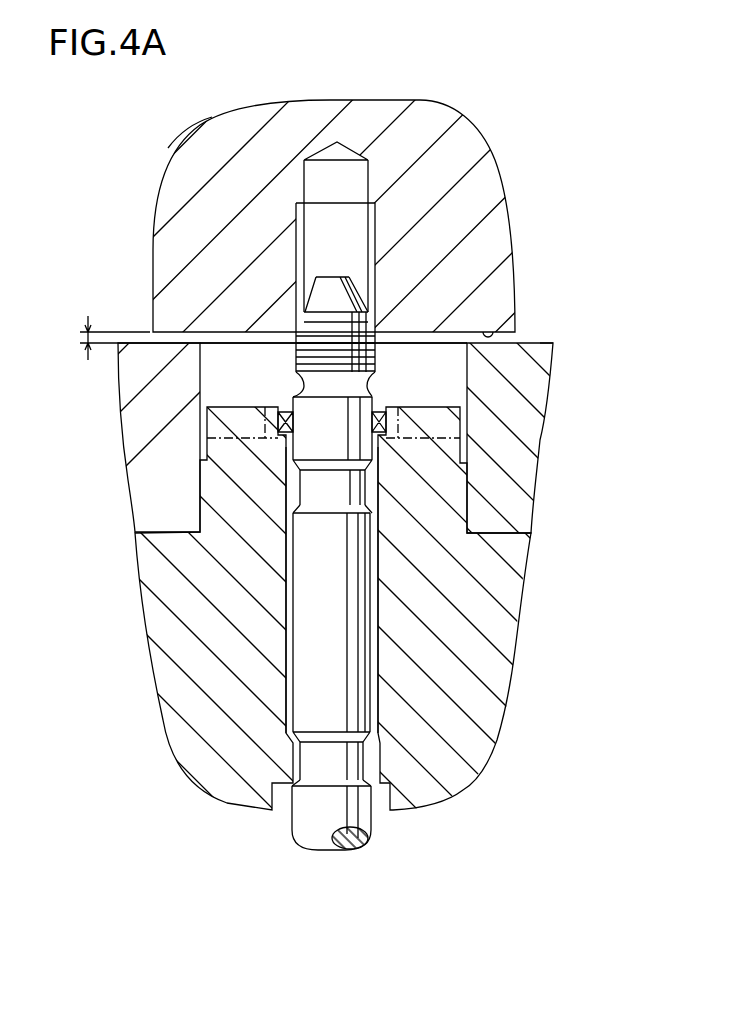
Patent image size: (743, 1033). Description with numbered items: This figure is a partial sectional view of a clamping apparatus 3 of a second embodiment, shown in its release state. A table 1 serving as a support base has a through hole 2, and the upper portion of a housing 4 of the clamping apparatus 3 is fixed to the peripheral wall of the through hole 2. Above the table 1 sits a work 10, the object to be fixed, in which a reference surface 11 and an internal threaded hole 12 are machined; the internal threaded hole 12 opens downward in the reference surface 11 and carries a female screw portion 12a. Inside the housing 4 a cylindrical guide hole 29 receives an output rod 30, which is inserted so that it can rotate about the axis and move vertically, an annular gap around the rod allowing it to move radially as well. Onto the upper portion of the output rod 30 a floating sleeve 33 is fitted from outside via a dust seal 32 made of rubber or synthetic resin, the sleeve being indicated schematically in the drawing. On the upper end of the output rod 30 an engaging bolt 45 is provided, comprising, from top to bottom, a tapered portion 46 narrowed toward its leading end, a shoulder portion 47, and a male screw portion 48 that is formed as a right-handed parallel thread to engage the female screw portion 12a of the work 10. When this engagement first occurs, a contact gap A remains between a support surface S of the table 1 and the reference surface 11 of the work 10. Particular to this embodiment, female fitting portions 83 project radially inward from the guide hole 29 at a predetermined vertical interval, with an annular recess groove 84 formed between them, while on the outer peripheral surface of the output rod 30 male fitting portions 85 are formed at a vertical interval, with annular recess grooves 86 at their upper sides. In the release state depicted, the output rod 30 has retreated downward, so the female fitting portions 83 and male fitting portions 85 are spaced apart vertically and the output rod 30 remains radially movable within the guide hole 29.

The table 1 is at (530, 421).
The through hole 2 is at (468, 380).
The clamping apparatus 3 is at (574, 557).
The housing 4 is at (486, 712).
The work 10 is at (502, 188).
The reference surface 11 is at (486, 330).
The internal threaded hole 12 is at (358, 182).
The female screw portion 12a is at (370, 230).
The guide hole 29 is at (299, 620).
The output rod 30 is at (396, 623).
The dust seal 32 is at (292, 418).
The floating sleeve 33 is at (284, 426).
The engaging bolt 45 is at (384, 368).
The tapered portion 46 is at (316, 288).
The shoulder portion 47 is at (298, 326).
The male screw portion 48 is at (298, 352).
The female fitting portions 83 is at (292, 478).
The annular recess groove 84 is at (288, 652).
The male fitting portions 85 is at (292, 548).
The annular recess grooves 86 is at (300, 487).
The contact gap A is at (88, 312).
The support surface S is at (538, 343).